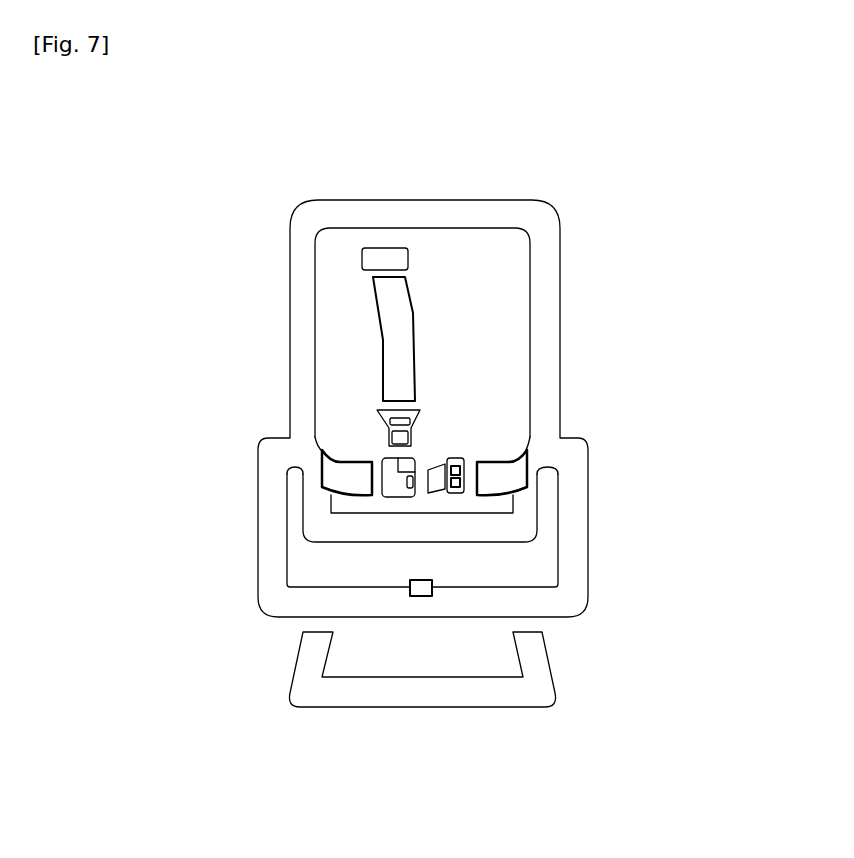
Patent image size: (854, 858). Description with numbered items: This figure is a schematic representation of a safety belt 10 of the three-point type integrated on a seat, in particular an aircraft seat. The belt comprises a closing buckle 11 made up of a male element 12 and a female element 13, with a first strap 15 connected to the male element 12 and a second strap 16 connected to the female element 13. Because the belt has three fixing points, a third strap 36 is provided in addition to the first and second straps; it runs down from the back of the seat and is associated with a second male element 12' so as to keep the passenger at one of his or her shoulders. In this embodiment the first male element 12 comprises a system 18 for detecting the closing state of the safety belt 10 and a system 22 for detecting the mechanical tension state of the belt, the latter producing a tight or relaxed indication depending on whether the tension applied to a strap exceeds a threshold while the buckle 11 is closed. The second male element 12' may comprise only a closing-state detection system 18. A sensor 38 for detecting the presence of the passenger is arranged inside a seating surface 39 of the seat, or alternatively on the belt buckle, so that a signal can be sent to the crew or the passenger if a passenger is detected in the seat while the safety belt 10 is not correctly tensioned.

The safety belt 10 is at (471, 406).
The third strap 36 is at (280, 300).
The second male element 12' is at (251, 359).
The female element 13 is at (271, 431).
The second strap 16 is at (218, 472).
The first strap 15 is at (585, 458).
The closing buckle 11 is at (393, 506).
The system for detecting the closing state 18 is at (422, 408).
The system for detecting the mechanical tension state 22 is at (453, 461).
The male element 12 is at (585, 494).
The seating surface 39 is at (528, 564).
The sensor 38 is at (556, 608).